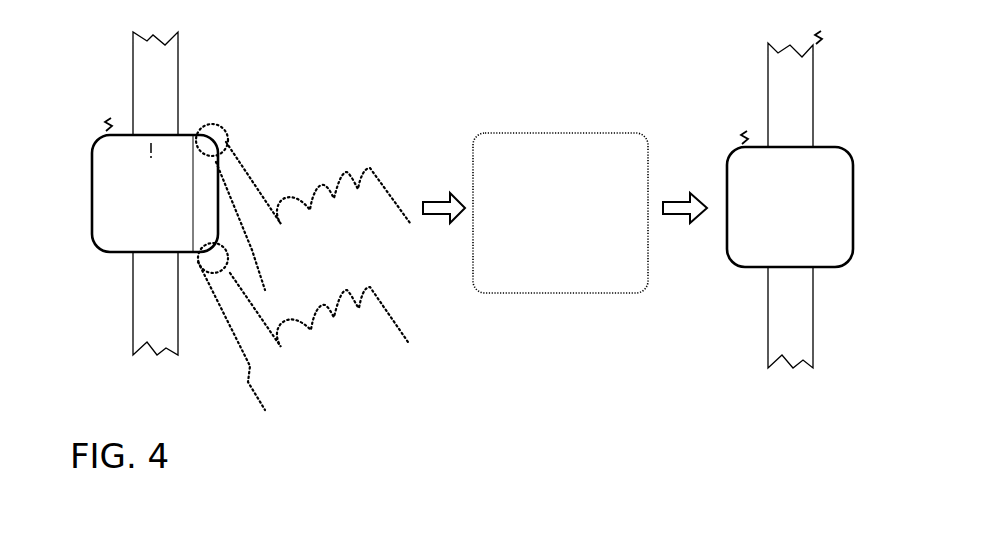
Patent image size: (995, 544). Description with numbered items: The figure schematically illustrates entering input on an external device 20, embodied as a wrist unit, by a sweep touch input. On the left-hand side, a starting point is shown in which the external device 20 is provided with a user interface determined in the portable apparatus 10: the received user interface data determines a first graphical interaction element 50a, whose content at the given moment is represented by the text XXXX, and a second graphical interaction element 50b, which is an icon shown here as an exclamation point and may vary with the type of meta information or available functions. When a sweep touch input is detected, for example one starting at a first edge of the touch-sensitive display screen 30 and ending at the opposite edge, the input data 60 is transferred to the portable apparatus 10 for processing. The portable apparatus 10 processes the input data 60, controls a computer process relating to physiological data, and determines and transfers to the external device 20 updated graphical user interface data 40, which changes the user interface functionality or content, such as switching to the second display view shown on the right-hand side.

The portable apparatus 10 is at (506, 112).
The external device 20 is at (214, 95).
The display screen 30 is at (108, 175).
The updated graphical user interface data 40 is at (685, 128).
The first graphical interaction element 50a is at (130, 190).
The second graphical interaction element 50b is at (145, 152).
The input data 60 is at (435, 137).